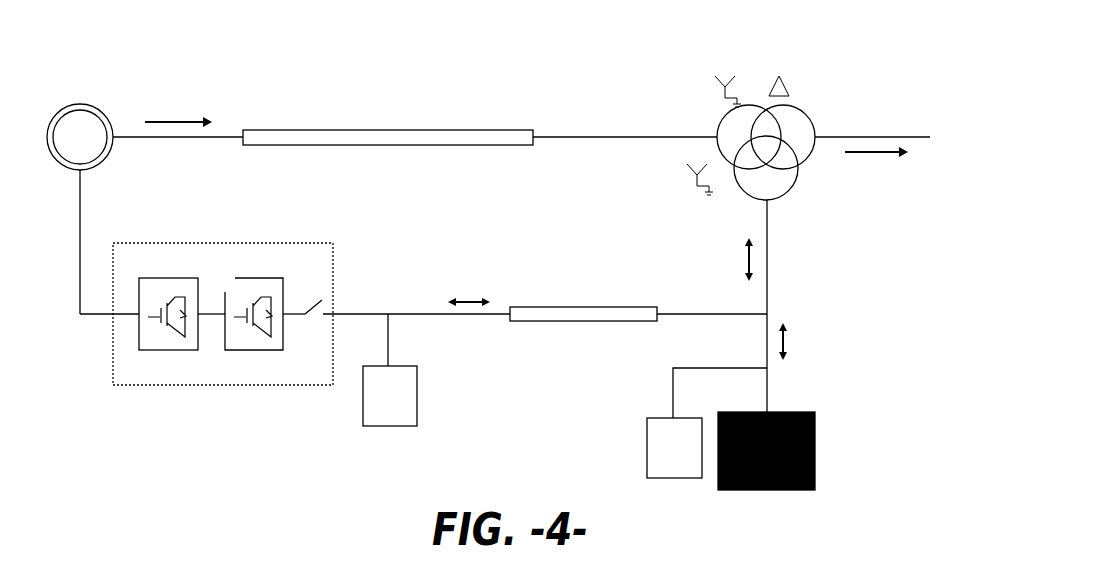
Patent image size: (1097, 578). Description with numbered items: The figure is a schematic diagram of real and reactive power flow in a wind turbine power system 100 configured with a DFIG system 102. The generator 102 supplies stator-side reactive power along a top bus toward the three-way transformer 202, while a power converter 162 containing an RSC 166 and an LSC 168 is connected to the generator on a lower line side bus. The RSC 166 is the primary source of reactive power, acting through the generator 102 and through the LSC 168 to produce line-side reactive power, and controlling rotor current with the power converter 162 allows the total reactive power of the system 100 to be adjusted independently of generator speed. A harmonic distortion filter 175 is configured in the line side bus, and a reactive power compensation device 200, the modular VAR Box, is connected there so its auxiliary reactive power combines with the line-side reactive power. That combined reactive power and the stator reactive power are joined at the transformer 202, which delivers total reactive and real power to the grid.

The wind turbine power system 100 is at (443, 50).
The DFIG system 102 is at (73, 106).
The power converter 162 is at (213, 418).
The RSC 166 is at (155, 350).
The LSC 168 is at (260, 350).
The harmonic distortion filter 175 is at (417, 385).
The reactive power compensation device 200 is at (815, 425).
The three-way transformer 202 is at (748, 106).